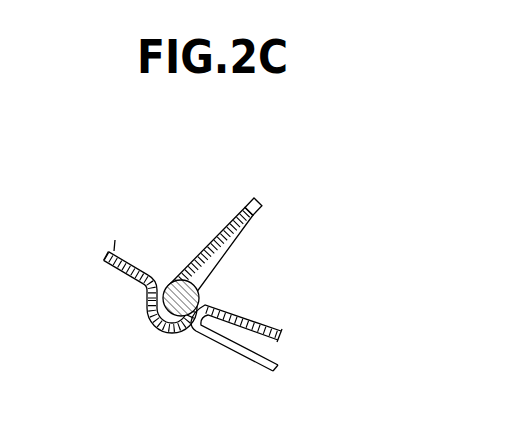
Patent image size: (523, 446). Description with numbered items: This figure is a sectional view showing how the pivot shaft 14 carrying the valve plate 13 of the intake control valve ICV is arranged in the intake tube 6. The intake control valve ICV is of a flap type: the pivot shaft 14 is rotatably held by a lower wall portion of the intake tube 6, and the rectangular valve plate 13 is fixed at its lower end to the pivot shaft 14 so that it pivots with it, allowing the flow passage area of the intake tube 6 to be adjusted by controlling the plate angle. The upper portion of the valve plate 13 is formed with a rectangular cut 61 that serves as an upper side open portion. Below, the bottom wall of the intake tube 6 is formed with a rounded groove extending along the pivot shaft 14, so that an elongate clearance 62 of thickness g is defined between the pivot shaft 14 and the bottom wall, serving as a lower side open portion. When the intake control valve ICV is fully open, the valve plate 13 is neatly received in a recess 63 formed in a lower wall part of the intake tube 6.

The intake tube 6 is at (126, 270).
The valve plate 13 is at (185, 262).
The pivot shaft 14 is at (200, 286).
The rectangular cut 61 is at (263, 207).
The elongate clearance 62 is at (168, 330).
The recess 63 is at (241, 313).
The intake control valve ICV is at (150, 222).
The thickness of the elongate clearance g is at (298, 340).